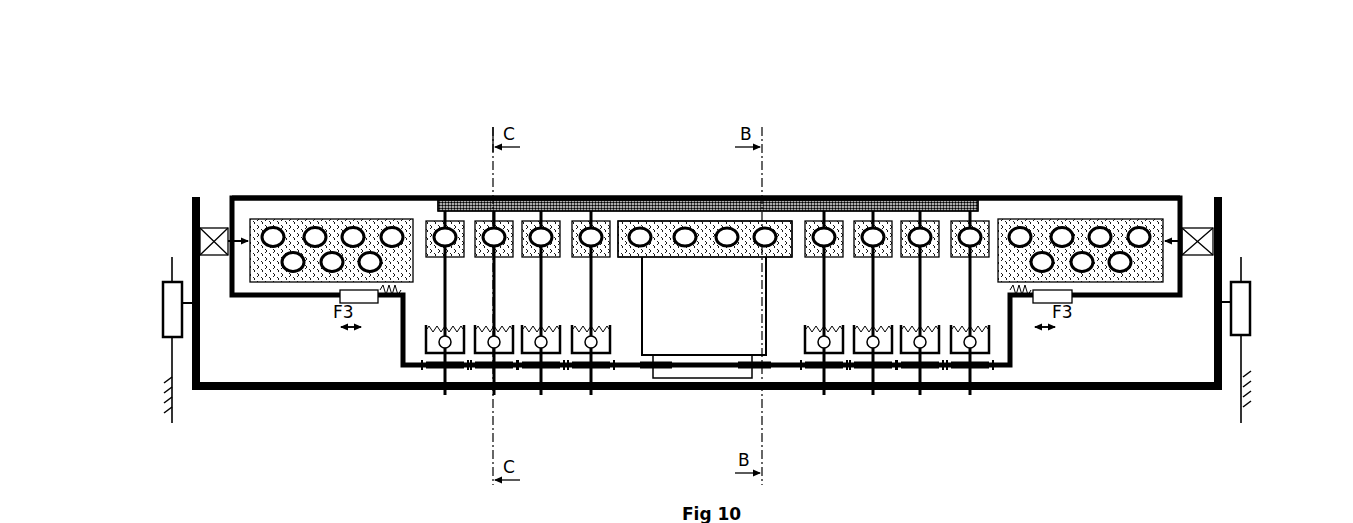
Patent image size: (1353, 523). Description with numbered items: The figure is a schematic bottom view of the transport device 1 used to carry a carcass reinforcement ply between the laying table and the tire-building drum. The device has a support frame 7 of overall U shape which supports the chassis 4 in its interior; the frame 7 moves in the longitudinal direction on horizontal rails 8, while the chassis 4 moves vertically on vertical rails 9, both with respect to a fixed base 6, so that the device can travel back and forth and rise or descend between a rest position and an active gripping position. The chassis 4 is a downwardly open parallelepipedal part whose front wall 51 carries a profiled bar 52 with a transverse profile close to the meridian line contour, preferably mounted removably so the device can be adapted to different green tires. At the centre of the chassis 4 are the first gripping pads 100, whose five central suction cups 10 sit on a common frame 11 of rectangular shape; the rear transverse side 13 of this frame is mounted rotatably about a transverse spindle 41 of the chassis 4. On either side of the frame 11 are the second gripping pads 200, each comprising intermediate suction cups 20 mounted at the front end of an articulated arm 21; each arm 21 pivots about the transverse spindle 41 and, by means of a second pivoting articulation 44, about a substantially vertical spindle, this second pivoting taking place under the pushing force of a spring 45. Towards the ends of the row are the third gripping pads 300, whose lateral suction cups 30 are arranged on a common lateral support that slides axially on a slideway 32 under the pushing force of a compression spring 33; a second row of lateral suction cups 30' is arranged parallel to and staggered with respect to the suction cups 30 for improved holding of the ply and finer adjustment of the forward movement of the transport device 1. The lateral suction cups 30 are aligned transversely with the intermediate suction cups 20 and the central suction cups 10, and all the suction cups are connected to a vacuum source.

The transport device 1 is at (1055, 116).
The chassis 4 is at (1158, 196).
The fixed base 6 is at (172, 423).
The support frame 7 is at (280, 390).
The horizontal rails 8 is at (168, 355).
The vertical rails 9 is at (214, 228).
The central suction cups 10 is at (761, 231).
The common frame 11 is at (703, 230).
The rear transverse side 13 is at (690, 380).
The intermediate suction cups 20 is at (509, 220).
The articulated arm 21 is at (497, 386).
The lateral suction cups 30 is at (718, 183).
The second row of lateral suction cups 30' is at (707, 198).
The slideway 32 is at (365, 290).
The compression spring 33 is at (389, 288).
The transverse spindle 41 is at (445, 346).
The second pivoting articulation 44 is at (426, 365).
The spring 45 is at (457, 365).
The front wall 51 is at (819, 197).
The profiled bar 52 is at (891, 206).
The first gripping pads 100 is at (649, 211).
The second gripping pads 200 is at (439, 203).
The third gripping pads 300 is at (262, 209).